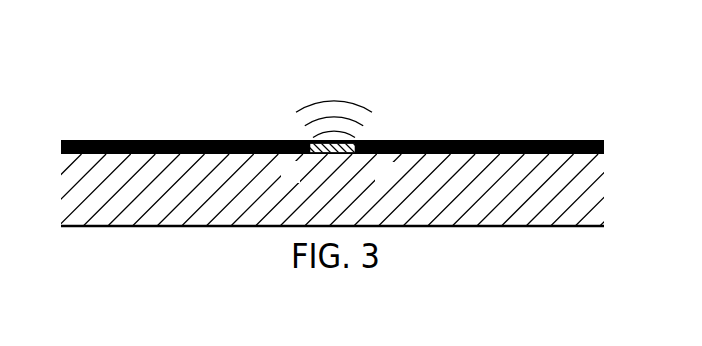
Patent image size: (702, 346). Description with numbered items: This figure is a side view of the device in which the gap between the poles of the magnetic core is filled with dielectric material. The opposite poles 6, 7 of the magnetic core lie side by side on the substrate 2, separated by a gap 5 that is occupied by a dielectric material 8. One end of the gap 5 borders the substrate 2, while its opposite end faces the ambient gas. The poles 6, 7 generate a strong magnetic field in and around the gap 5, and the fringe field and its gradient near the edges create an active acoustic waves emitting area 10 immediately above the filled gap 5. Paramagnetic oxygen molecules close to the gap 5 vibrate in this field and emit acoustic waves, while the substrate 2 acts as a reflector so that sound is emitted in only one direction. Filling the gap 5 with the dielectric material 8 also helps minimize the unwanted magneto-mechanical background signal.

The substrate 2 is at (602, 201).
The gap 5 is at (325, 143).
The pole 6 is at (290, 140).
The pole 7 is at (405, 140).
The dielectric material 8 is at (351, 143).
The active acoustic waves emitting area 10 is at (328, 102).